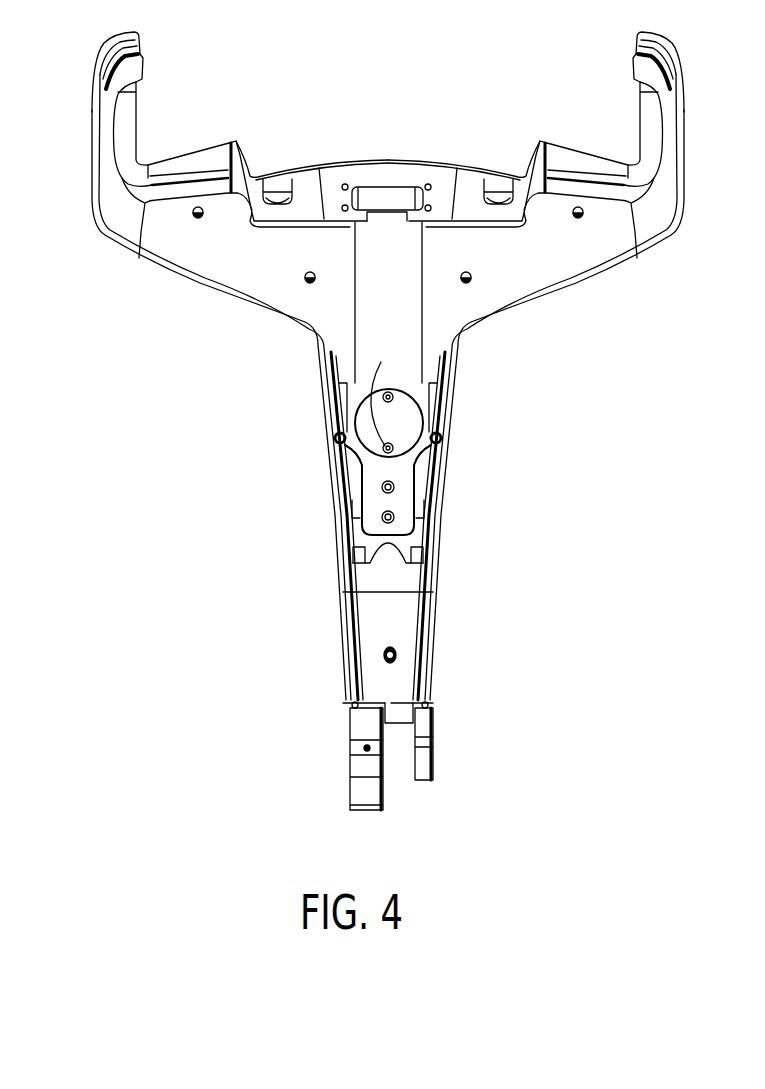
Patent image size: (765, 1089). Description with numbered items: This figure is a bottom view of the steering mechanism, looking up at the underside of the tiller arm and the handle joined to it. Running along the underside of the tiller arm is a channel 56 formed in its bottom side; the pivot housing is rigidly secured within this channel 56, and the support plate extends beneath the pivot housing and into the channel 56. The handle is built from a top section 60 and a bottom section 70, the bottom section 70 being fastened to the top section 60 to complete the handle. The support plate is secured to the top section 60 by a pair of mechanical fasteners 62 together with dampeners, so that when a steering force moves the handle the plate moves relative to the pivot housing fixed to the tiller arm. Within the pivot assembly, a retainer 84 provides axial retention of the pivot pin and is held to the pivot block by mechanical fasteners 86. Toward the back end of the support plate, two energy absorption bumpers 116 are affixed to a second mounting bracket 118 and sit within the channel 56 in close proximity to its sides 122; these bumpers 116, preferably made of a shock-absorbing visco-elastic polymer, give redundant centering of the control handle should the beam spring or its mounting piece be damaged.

The channel 56 is at (384, 566).
The top section 60 is at (113, 212).
The mechanical fasteners 62 is at (332, 440).
The bottom section 70 is at (192, 266).
The retainer 84 is at (412, 414).
The mechanical fasteners 86 is at (383, 395).
The energy absorption bumpers 116 is at (352, 556).
The second mounting bracket 118 is at (407, 562).
The sides 122 is at (335, 521).